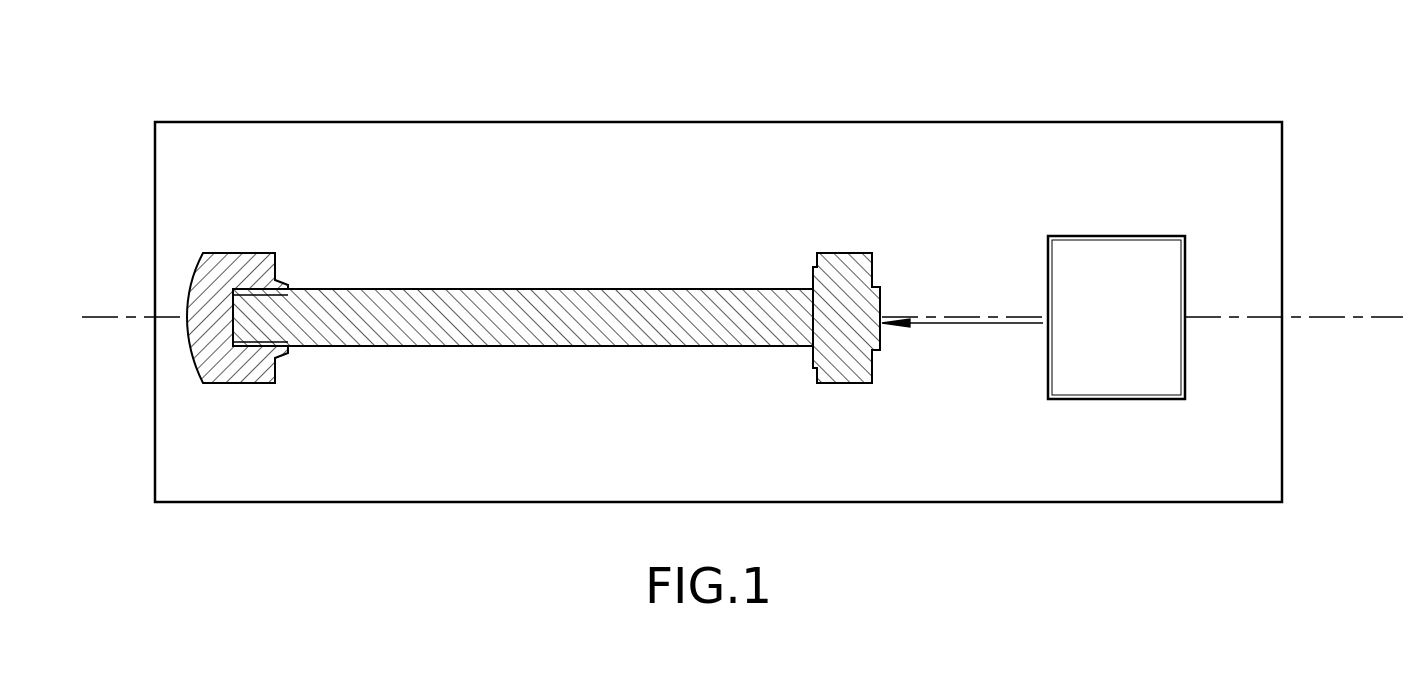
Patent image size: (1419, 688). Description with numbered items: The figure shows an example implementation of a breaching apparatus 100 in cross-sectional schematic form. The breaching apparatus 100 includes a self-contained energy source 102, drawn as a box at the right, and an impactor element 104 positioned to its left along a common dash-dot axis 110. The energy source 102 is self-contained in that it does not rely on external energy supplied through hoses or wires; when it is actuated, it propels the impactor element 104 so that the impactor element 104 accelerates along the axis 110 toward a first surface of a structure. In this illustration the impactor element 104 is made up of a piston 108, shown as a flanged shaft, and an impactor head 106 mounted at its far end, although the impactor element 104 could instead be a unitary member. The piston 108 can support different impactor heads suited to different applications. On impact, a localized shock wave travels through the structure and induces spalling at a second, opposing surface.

The breaching apparatus 100 is at (1232, 122).
The self-contained energy source 102 is at (1173, 235).
The impactor element 104 is at (566, 320).
The impactor head 106 is at (272, 252).
The piston 108 is at (879, 278).
The axis 110 is at (1312, 317).